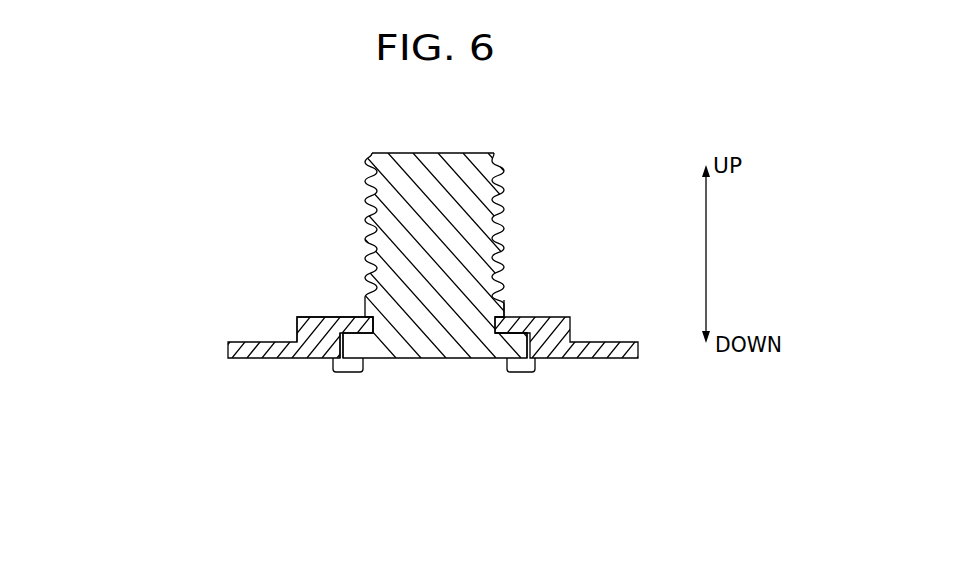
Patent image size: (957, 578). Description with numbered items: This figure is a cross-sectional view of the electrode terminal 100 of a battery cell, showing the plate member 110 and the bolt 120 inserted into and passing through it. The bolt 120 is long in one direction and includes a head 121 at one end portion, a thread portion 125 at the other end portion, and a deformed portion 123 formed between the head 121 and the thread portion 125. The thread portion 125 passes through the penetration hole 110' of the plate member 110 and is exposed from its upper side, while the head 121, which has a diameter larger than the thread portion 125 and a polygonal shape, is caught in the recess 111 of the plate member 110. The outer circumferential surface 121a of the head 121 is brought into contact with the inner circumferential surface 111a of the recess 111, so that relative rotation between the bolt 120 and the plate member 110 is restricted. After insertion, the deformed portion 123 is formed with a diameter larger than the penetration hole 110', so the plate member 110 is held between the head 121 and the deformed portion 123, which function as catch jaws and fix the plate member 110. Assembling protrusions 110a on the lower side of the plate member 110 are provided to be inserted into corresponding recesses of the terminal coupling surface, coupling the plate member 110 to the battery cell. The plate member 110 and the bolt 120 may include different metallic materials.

The electrode terminal 100 is at (131, 225).
The bolt 120 is at (272, 237).
The thread portion 125 is at (376, 198).
The head 121 is at (434, 345).
The deformed portion 123 is at (503, 313).
The outer circumferential surface 121a is at (504, 348).
The plate member 110 is at (403, 359).
The penetration hole 110' is at (330, 308).
The assembling protrusions 110a is at (348, 372).
The recess 111 is at (338, 339).
The inner circumferential surface 111a is at (543, 356).